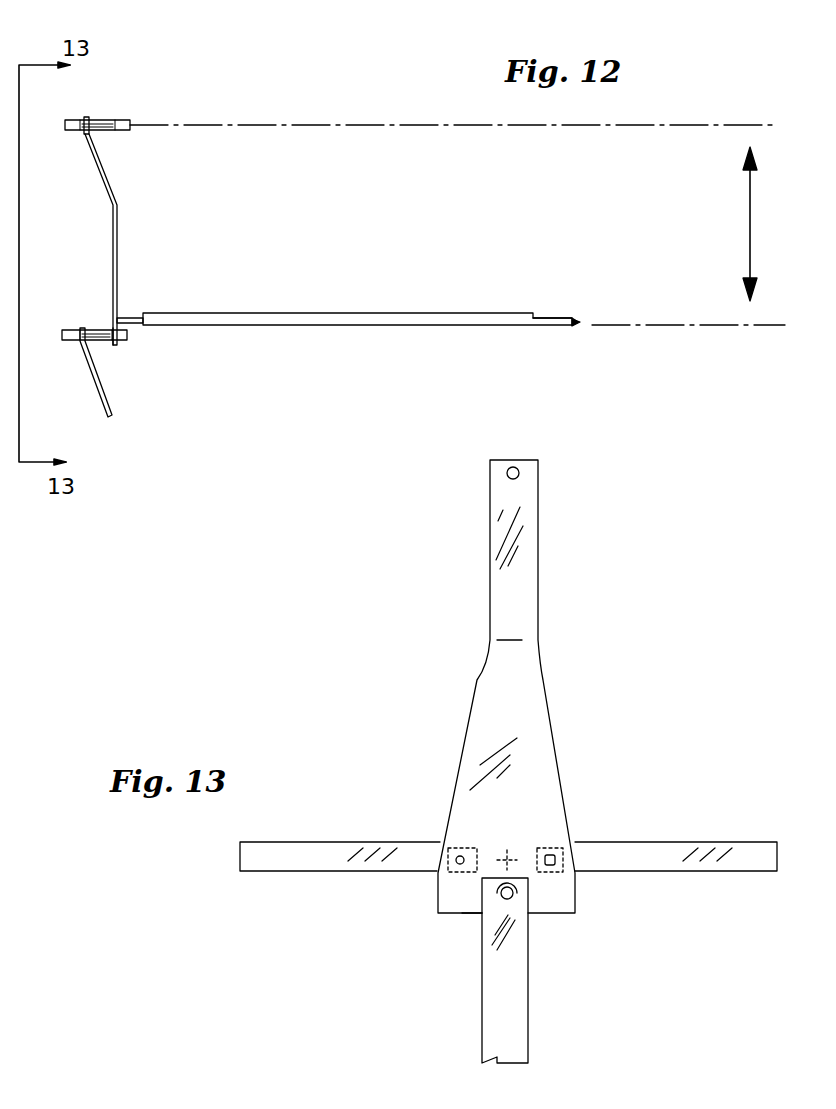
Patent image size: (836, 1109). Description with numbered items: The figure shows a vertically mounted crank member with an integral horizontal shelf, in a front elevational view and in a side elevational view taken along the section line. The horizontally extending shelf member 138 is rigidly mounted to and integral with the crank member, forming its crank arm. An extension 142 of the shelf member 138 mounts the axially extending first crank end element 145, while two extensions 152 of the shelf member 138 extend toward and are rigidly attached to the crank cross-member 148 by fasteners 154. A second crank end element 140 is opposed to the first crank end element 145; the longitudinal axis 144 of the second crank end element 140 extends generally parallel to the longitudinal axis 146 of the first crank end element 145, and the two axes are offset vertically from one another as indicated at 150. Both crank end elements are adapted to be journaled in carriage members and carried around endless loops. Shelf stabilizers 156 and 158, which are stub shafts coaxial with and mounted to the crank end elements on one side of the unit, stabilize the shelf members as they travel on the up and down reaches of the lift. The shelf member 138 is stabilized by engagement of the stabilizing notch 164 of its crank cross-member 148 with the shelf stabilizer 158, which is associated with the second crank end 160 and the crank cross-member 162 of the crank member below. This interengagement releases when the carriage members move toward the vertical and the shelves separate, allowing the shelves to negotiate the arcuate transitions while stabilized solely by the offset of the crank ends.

In FIG. 12, the shelf member 138 is at (245, 316).
In FIG. 13, the shelf member 138 is at (620, 838).
In FIG. 12, the second crank end element 140 is at (70, 118).
In FIG. 13, the second crank end element 140 is at (519, 476).
In FIG. 12, the extension 142 is at (549, 318).
In FIG. 12, the longitudinal axis 144 is at (558, 128).
In FIG. 12, the first crank end element 145 is at (571, 328).
In FIG. 12, the longitudinal axis 146 is at (688, 326).
In FIG. 13, the longitudinal axis 146 is at (513, 863).
In FIG. 12, the crank cross-member 148 is at (102, 170).
In FIG. 13, the crank cross-member 148 is at (538, 610).
In FIG. 12, the vertical offset 150 is at (749, 230).
In FIG. 12, the extensions 152 is at (136, 313).
In FIG. 13, the extensions 152 is at (467, 847).
In FIG. 13, the fasteners 154 is at (462, 862).
In FIG. 12, the shelf stabilizer 156 is at (118, 120).
In FIG. 12, the shelf stabilizer 158 is at (125, 345).
In FIG. 13, the shelf stabilizer 158 is at (500, 900).
In FIG. 12, the second crank end 160 is at (66, 329).
In FIG. 13, the second crank end 160 is at (517, 900).
In FIG. 12, the crank cross-member 162 is at (108, 391).
In FIG. 13, the crank cross-member 162 is at (528, 1010).
In FIG. 13, the stabilizing notch 164 is at (480, 888).